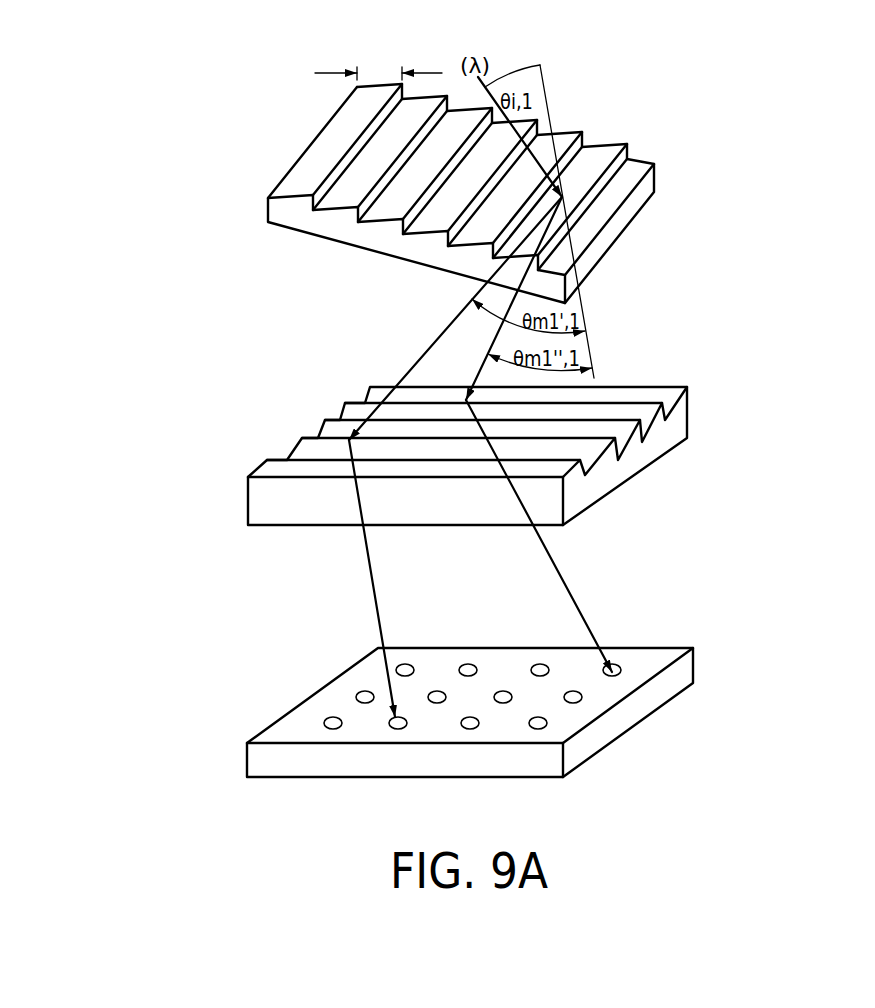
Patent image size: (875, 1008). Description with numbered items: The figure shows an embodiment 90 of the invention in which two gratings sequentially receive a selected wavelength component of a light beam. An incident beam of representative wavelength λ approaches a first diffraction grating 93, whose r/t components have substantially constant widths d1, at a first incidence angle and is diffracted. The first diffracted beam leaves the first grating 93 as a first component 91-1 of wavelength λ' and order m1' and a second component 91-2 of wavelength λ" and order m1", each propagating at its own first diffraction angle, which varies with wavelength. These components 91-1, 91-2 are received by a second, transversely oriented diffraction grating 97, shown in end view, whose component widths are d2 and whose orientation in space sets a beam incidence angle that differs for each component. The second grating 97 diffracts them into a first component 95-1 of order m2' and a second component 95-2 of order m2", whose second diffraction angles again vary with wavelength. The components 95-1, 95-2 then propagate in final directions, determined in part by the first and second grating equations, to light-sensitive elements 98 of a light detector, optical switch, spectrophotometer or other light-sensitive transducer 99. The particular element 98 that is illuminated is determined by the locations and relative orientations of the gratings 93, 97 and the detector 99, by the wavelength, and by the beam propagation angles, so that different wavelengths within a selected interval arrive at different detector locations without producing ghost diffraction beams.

The embodiment 90 is at (705, 138).
The first diffraction grating 93 is at (622, 222).
The second diffraction grating 97 is at (592, 482).
The light-sensitive transducer 99 is at (600, 720).
The light-sensitive elements 98 is at (393, 726).
The first component of the first diffracted beam 91-1 is at (470, 302).
The second component of the first diffracted beam 91-2 is at (493, 343).
The first component of the second diffracted beam 95-1 is at (362, 547).
The second component of the second diffracted beam 95-2 is at (555, 562).